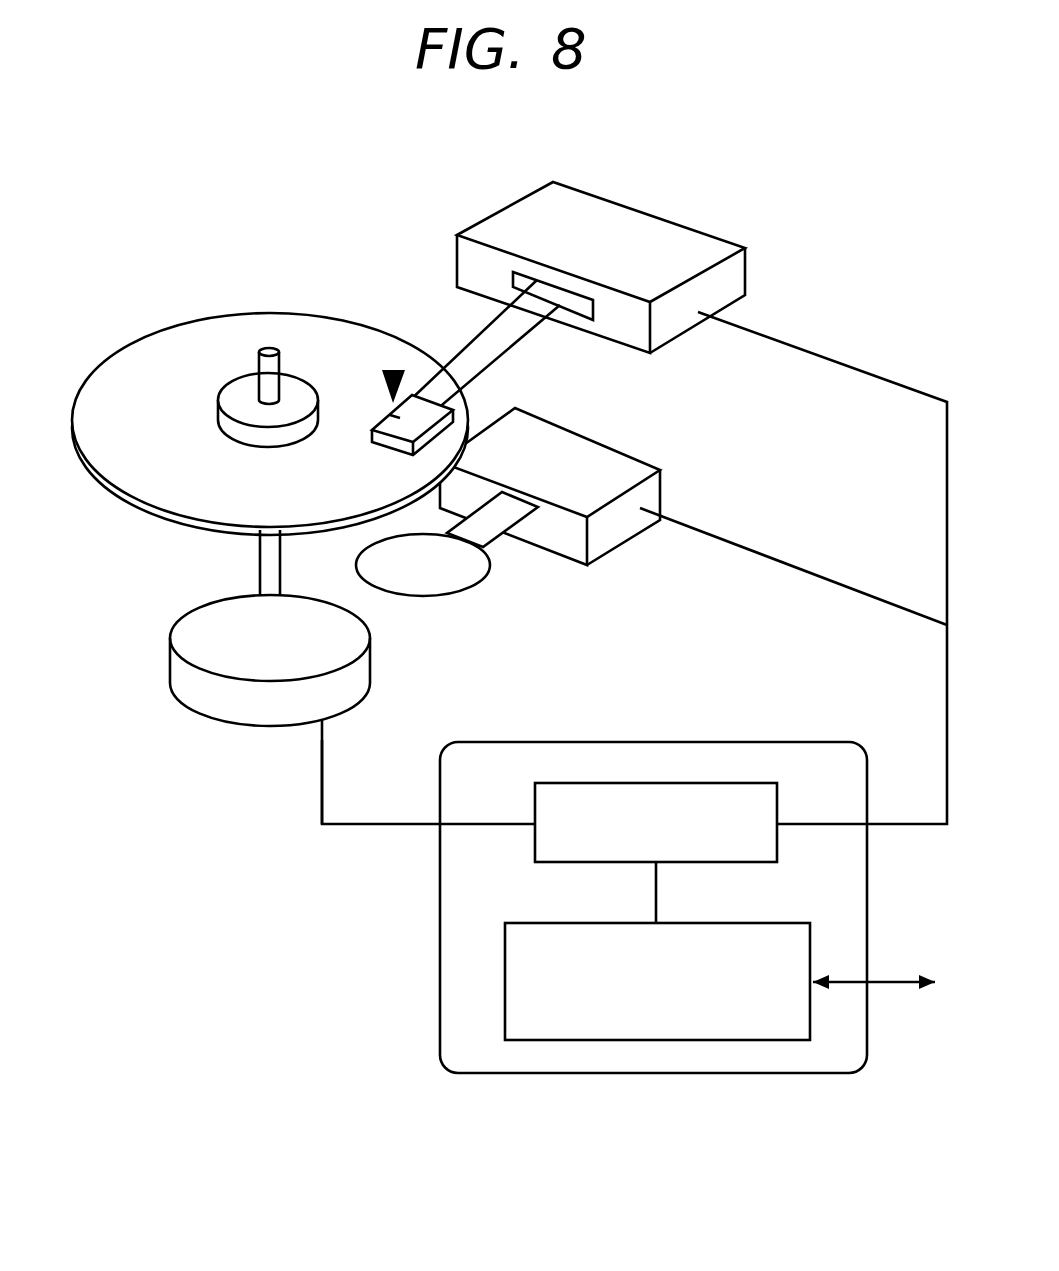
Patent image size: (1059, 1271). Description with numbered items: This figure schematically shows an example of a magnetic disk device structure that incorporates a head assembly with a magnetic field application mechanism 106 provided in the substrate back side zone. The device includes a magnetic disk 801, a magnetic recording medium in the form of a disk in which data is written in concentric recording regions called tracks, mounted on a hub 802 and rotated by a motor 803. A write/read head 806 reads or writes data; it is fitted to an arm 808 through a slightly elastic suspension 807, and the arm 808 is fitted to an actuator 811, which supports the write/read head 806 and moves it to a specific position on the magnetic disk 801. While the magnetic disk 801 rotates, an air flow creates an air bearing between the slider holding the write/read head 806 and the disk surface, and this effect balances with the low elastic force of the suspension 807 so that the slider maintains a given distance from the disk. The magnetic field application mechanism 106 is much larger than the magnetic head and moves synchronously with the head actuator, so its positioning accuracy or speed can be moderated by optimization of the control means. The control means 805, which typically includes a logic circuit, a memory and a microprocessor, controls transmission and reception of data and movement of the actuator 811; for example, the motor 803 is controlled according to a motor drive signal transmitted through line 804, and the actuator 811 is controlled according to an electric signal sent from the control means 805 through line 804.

The magnetic disk 801 is at (178, 483).
The spindle hub 802 is at (267, 350).
The motor 803 is at (218, 705).
The line 804 is at (320, 783).
The control means 805 is at (723, 783).
The write/read head 806 is at (380, 417).
The suspension 807 is at (475, 347).
The arm 808 is at (517, 308).
The actuator 811 is at (640, 225).
The magnetic field application mechanism 106 is at (455, 583).